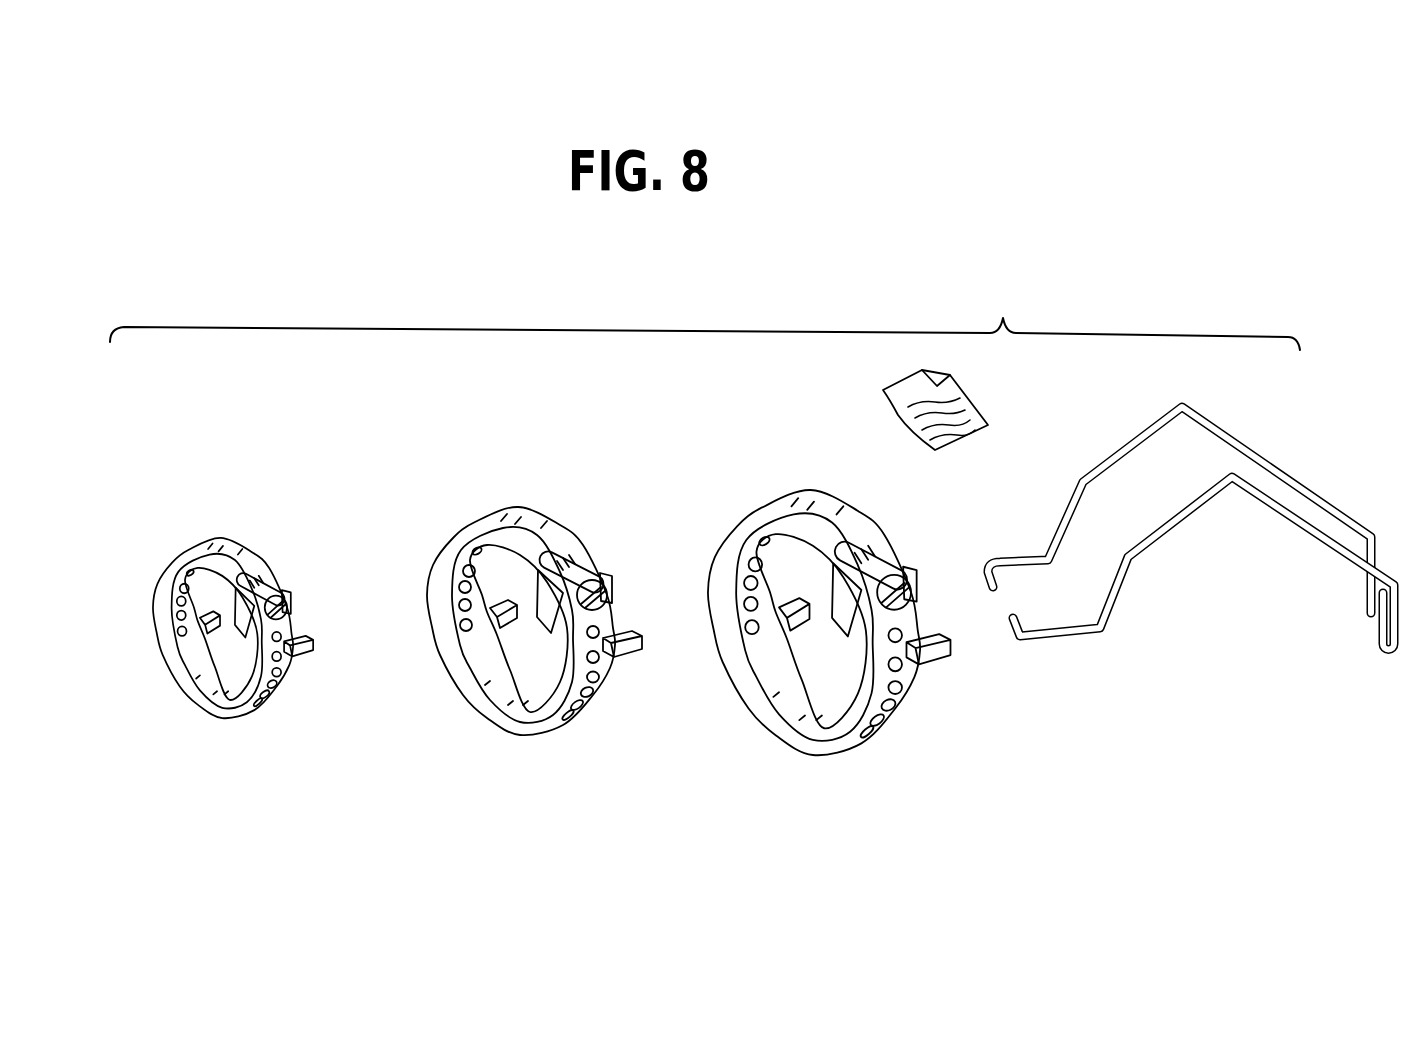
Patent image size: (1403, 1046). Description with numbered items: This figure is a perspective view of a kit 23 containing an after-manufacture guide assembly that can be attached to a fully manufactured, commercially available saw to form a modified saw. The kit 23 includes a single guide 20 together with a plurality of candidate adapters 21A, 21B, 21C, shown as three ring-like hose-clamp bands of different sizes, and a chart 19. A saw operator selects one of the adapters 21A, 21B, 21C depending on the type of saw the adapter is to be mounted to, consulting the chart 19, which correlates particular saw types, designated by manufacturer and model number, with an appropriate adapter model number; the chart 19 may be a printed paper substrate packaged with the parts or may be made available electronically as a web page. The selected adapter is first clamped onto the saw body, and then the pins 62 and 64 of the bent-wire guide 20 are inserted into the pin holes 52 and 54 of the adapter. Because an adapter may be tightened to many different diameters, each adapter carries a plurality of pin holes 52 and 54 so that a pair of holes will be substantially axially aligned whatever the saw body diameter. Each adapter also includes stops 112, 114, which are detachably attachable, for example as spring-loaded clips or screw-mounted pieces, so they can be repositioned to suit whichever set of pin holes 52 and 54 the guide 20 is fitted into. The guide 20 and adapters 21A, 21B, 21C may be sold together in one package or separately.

The kit 23 is at (705, 315).
The chart 19 is at (955, 383).
The guide 20 is at (1163, 552).
The pin 64 is at (978, 578).
The pin 62 is at (1015, 632).
The adapter 21A is at (228, 511).
The adapter 21B is at (511, 488).
The adapter 21C is at (799, 474).
The pin hole 54 is at (184, 589).
The pin hole 52 is at (283, 672).
The stop 114 is at (207, 646).
The stop 112 is at (316, 652).